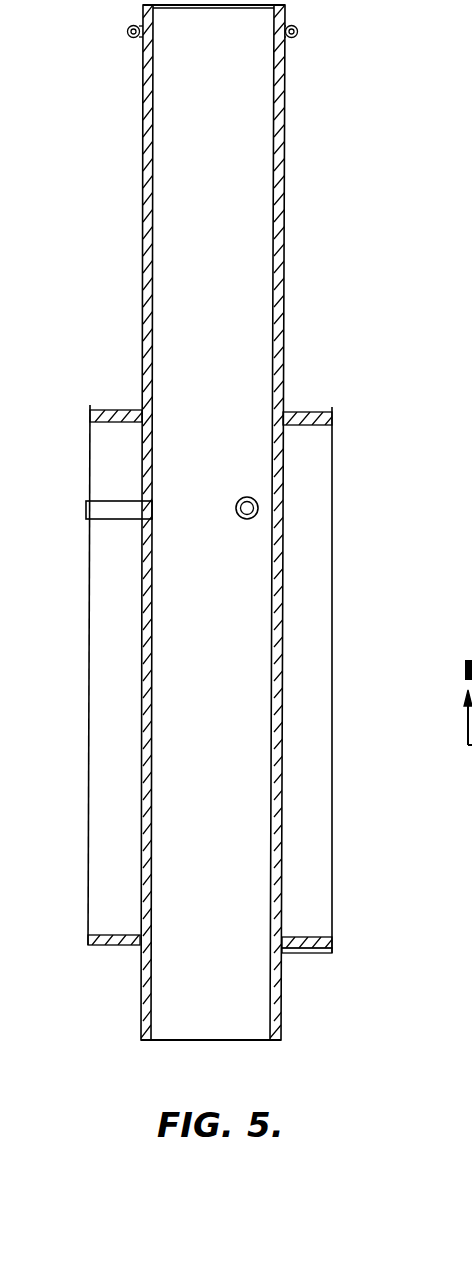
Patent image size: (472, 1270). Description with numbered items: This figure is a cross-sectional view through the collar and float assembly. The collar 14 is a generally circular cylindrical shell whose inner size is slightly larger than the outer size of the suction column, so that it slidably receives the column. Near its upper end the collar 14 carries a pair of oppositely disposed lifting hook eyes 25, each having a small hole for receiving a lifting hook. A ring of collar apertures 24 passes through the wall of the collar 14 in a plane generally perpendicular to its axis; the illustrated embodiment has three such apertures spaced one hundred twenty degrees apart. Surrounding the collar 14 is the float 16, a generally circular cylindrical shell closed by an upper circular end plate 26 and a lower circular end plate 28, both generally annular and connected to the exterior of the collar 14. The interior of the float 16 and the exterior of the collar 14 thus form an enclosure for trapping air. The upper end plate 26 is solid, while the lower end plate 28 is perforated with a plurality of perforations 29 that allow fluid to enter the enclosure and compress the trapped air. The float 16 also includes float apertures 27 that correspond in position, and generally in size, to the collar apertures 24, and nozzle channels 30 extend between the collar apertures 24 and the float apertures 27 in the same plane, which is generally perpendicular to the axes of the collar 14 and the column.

The collar 14 is at (143, 178).
The float 16 is at (210, 691).
The collar apertures 24 is at (238, 517).
The lifting hook eyes 25 is at (127, 31).
The upper circular end plate 26 is at (310, 412).
The float apertures 27 is at (86, 508).
The lower circular end plate 28 is at (303, 953).
The perforations 29 is at (112, 945).
The nozzle channels 30 is at (85, 497).